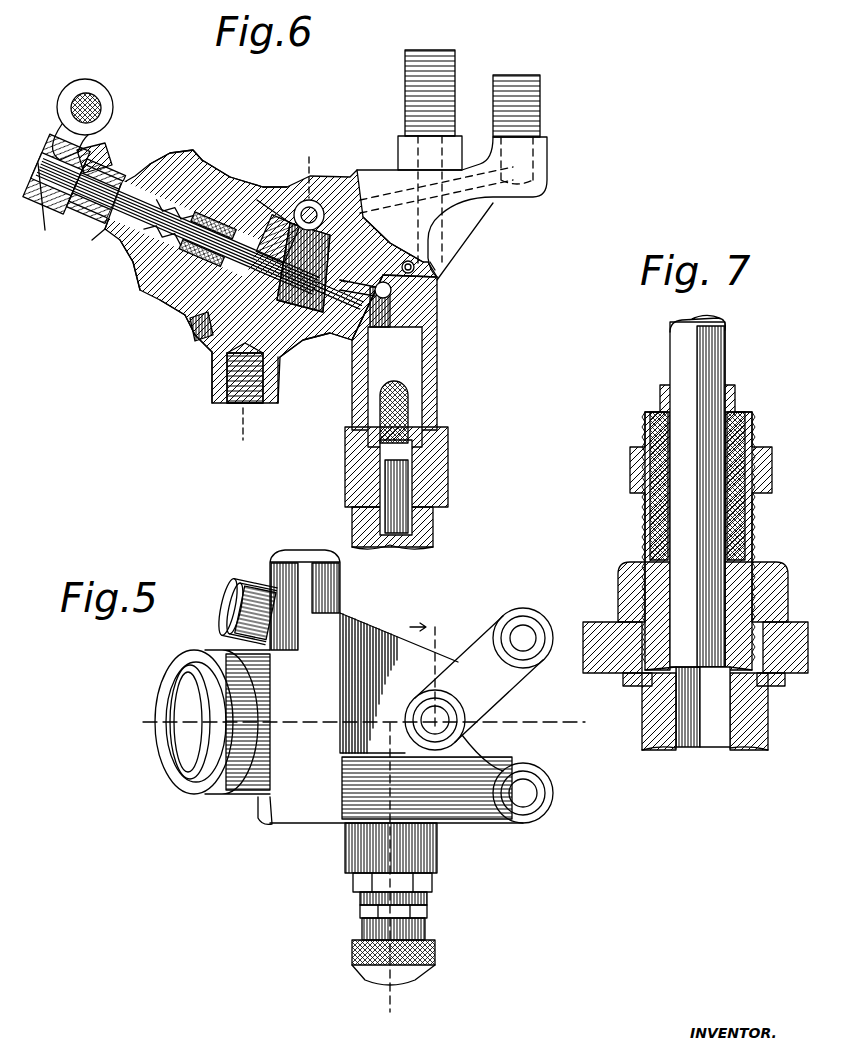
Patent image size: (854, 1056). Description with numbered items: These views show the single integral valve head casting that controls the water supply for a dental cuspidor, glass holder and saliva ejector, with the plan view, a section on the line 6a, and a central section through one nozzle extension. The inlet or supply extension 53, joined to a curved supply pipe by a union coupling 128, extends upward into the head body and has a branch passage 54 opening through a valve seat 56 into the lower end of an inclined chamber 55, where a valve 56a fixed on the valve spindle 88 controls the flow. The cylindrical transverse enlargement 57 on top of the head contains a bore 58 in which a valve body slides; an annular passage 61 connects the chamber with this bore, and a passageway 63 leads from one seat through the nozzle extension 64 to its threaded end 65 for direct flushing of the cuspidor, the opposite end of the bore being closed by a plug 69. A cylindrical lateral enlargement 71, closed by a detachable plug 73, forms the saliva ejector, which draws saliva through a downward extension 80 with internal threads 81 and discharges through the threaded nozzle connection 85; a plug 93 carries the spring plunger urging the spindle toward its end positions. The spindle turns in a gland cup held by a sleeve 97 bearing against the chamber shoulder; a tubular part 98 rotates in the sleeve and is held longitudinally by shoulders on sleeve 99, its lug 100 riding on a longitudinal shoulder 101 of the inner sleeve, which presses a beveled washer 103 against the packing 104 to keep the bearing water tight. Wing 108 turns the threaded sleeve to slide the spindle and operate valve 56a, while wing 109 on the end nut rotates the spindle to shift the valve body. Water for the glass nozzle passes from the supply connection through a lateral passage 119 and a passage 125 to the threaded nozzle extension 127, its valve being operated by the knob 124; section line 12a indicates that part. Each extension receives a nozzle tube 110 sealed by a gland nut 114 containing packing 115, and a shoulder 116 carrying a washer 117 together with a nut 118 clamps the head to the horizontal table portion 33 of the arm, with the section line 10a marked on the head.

In FIG. 7, the horizontal table portion 33 is at (592, 674).
In FIG. 6, the inlet or supply extension 53 is at (440, 392).
In FIG. 6, the branch passage 54 is at (323, 360).
In FIG. 6, the inclined chamber 55 is at (228, 362).
In FIG. 6, the valve seat 56 is at (396, 256).
In FIG. 6, the valve 56a is at (322, 372).
In FIG. 5, the cylindrical transverse enlargement 57 is at (238, 806).
In FIG. 6, the bore or cylinder 58 is at (332, 196).
In FIG. 6, the annular enlargement or passage 61 is at (303, 277).
In FIG. 6, the passageway 63 is at (477, 182).
In FIG. 6, the nozzle extension 64 is at (549, 163).
In FIG. 7, the nozzle extension 64 is at (770, 736).
In FIG. 5, the nozzle extension 64 is at (473, 826).
In FIG. 6, the threaded end 65 is at (542, 99).
In FIG. 7, the threaded end 65 is at (766, 540).
In FIG. 5, the threaded end 65 is at (554, 791).
In FIG. 5, the plug 69 is at (304, 549).
In FIG. 5, the cylindrical lateral enlargement 71 is at (361, 624).
In FIG. 5, the detachable plug 73 is at (226, 583).
In FIG. 6, the downward extension 80 is at (232, 402).
In FIG. 6, the internal threads 81 is at (240, 406).
In FIG. 5, the threaded nozzle connection 85 is at (526, 620).
In FIG. 6, the valve spindle 88 is at (134, 290).
In FIG. 5, the plug 93 is at (272, 836).
In FIG. 6, the sleeve 97 is at (196, 150).
In FIG. 6, the tubular part 98 is at (126, 262).
In FIG. 6, the sleeve 99 is at (176, 158).
In FIG. 6, the lug 100 is at (188, 304).
In FIG. 6, the longitudinal shoulder 101 is at (175, 314).
In FIG. 6, the beveled washer 103 is at (205, 330).
In FIG. 6, the packing 104 is at (210, 358).
In FIG. 6, the finger piece or wing 108 is at (97, 146).
In FIG. 6, the finger piece or wing 109 is at (87, 82).
In FIG. 7, the nozzle tube 110 is at (726, 362).
In FIG. 7, the gland nut 114 is at (636, 470).
In FIG. 7, the packing 115 is at (652, 437).
In FIG. 7, the shoulder 116 is at (648, 708).
In FIG. 7, the washer 117 is at (634, 689).
In FIG. 7, the nut 118 is at (632, 584).
In FIG. 6, the lateral passage 119 is at (392, 296).
In FIG. 5, the fingerpiece or knob 124 is at (437, 951).
In FIG. 6, the passage 125 is at (420, 270).
In FIG. 6, the threaded nozzle extension 127 is at (404, 70).
In FIG. 5, the threaded nozzle extension 127 is at (470, 722).
In FIG. 6, the union coupling 128 is at (450, 466).
In FIG. 6, the section line 10a is at (281, 297).
In FIG. 5, the section line 12a is at (408, 823).
In FIG. 5, the section line 6a is at (516, 856).